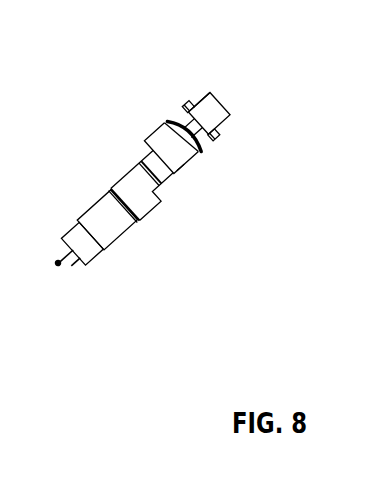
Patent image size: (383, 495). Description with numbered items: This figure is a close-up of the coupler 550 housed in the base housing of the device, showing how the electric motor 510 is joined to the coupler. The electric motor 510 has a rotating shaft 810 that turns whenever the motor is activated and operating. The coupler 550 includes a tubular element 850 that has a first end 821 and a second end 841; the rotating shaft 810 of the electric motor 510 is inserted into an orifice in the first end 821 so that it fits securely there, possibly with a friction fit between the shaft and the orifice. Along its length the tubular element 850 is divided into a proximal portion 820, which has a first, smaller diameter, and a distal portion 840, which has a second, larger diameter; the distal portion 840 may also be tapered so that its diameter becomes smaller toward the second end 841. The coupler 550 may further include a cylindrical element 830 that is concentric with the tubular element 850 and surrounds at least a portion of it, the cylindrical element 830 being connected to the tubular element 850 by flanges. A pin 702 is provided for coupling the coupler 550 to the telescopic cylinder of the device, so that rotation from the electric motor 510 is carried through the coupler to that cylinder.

The electric motor 510 is at (97, 278).
The coupler 550 is at (209, 238).
The pin 702 is at (202, 56).
The rotating shaft 810 is at (88, 118).
The proximal portion 820 is at (159, 248).
The first end 821 is at (124, 104).
The cylindrical element 830 is at (217, 213).
The distal portion 840 is at (251, 164).
The second end 841 is at (238, 61).
The tubular element 850 is at (166, 75).